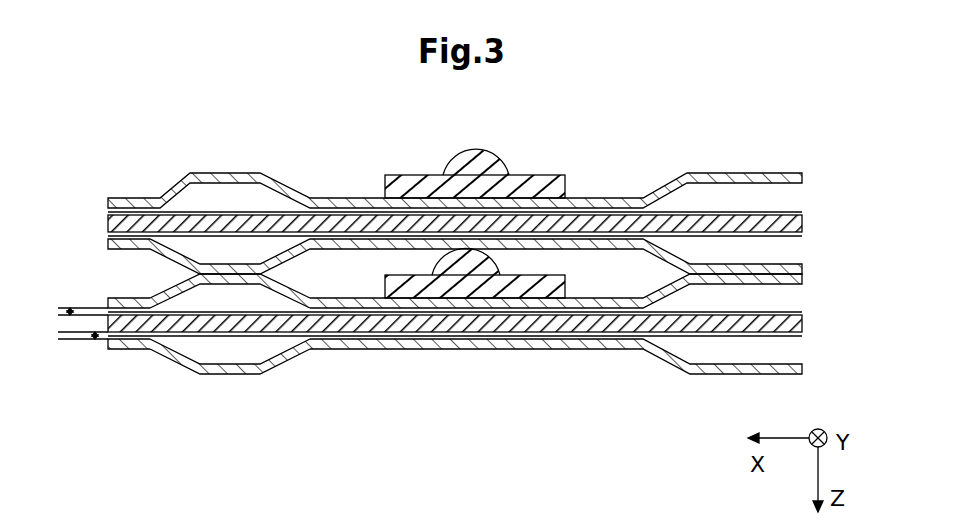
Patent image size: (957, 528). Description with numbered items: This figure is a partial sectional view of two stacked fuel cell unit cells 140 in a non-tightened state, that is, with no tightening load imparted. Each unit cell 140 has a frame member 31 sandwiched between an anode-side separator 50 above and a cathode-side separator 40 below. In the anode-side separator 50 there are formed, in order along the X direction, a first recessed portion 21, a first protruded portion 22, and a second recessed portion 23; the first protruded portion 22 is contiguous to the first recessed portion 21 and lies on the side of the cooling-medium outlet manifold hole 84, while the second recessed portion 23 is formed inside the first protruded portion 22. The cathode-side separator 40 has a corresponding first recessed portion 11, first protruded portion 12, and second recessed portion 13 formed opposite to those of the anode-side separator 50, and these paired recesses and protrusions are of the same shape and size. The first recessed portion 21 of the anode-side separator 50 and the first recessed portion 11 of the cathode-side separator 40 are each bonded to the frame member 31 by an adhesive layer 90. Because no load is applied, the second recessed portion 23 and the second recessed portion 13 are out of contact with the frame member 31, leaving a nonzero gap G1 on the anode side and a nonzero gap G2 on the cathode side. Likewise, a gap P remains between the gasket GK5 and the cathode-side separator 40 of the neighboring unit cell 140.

The cooling-medium outlet manifold hole 84 is at (86, 194).
The unit cell 140 is at (846, 148).
The anode-side separator 50 is at (775, 172).
The frame member 31 is at (775, 214).
The cathode-side separator 40 is at (775, 263).
The gasket GK5 is at (548, 176).
The gap P is at (462, 246).
The adhesive layer 90 is at (590, 349).
The first recessed portion 21 is at (362, 297).
The first protruded portion 22 is at (206, 285).
The second recessed portion 23 is at (113, 297).
The first recessed portion 11 is at (358, 350).
The first protruded portion 12 is at (223, 375).
The second recessed portion 13 is at (131, 350).
The gap G1 is at (71, 306).
The gap G2 is at (96, 341).